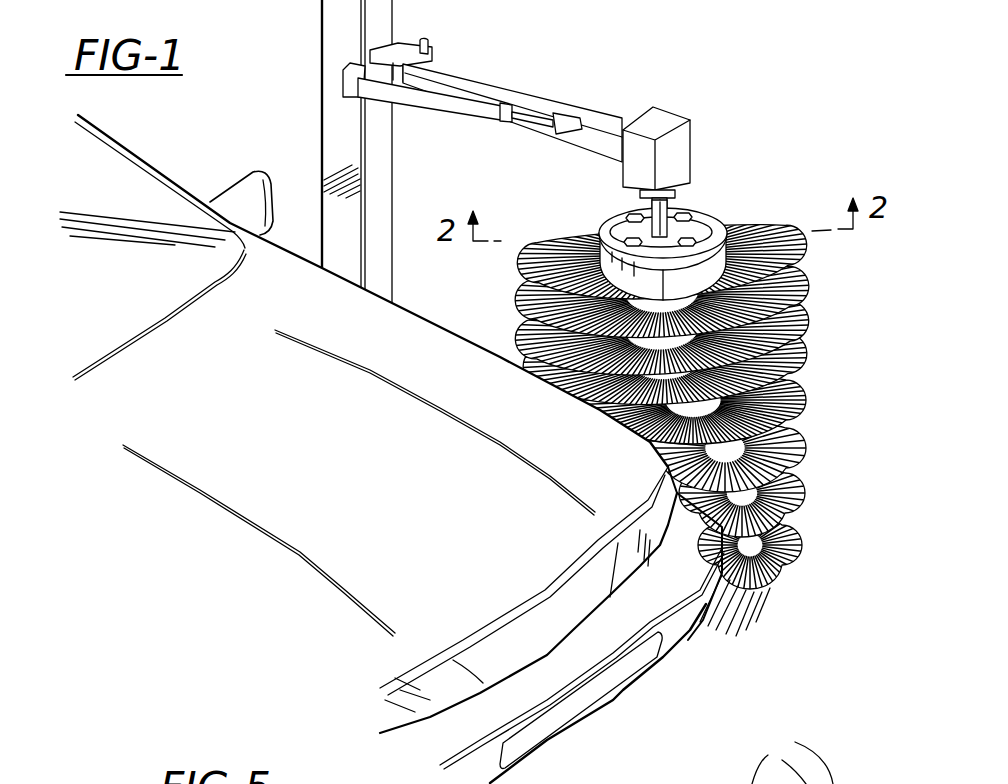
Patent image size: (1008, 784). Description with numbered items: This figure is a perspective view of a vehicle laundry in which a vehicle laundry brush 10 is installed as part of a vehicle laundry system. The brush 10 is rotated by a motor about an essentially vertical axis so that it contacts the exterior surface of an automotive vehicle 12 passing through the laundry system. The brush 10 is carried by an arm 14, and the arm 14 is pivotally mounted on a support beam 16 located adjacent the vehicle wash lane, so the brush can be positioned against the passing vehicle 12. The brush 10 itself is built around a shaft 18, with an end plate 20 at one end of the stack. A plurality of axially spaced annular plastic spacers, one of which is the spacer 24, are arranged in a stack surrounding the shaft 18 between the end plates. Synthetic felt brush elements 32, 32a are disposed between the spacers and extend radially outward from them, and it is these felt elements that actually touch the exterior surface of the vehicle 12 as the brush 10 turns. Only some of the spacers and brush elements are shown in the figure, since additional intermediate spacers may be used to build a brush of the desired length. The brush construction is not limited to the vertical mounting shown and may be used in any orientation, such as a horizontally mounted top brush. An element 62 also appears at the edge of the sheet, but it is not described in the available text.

The vehicle laundry brush 10 is at (657, 376).
The automotive vehicle 12 is at (204, 158).
The arm 14 is at (571, 94).
The support beam 16 is at (404, 17).
The shaft 18 is at (670, 197).
The end plate 20 is at (702, 226).
The annular plastic spacer 24 is at (589, 233).
The synthetic felt brush element 32 is at (807, 357).
The synthetic felt brush element 32a is at (805, 251).
The ring 62 is at (792, 757).